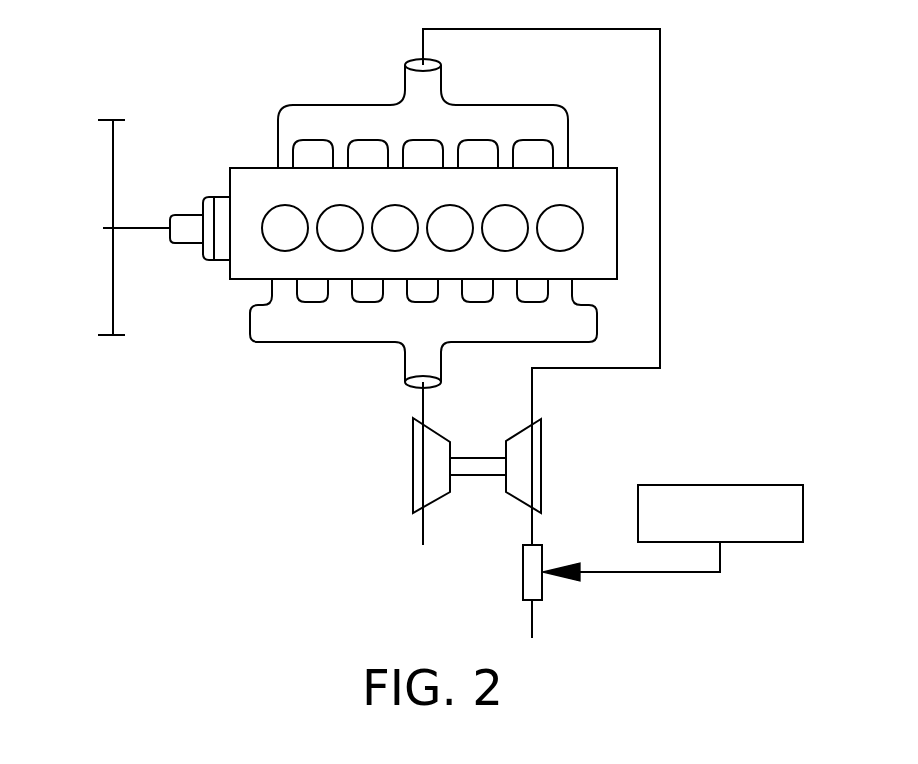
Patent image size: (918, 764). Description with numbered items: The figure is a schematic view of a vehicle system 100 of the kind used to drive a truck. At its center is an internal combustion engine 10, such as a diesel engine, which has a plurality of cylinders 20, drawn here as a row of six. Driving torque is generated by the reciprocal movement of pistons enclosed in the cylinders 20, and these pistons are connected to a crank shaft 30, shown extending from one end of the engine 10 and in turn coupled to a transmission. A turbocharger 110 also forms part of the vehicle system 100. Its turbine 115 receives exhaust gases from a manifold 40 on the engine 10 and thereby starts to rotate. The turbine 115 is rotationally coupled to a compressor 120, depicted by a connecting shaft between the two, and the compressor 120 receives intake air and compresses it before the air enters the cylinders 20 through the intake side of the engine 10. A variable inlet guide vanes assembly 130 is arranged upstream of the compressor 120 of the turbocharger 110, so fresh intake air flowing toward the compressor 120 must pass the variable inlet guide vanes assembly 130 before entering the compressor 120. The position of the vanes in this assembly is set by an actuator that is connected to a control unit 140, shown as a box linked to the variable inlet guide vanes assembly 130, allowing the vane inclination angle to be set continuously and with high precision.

The internal combustion engine 10 is at (244, 130).
The cylinders 20 is at (577, 241).
The crank shaft 30 is at (140, 226).
The manifold 40 is at (288, 323).
The vehicle system 100 is at (334, 372).
The turbocharger 110 is at (476, 500).
The turbine 115 is at (412, 465).
The compressor 120 is at (543, 467).
The variable inlet guide vanes assembly 130 is at (522, 572).
The control unit 140 is at (725, 485).